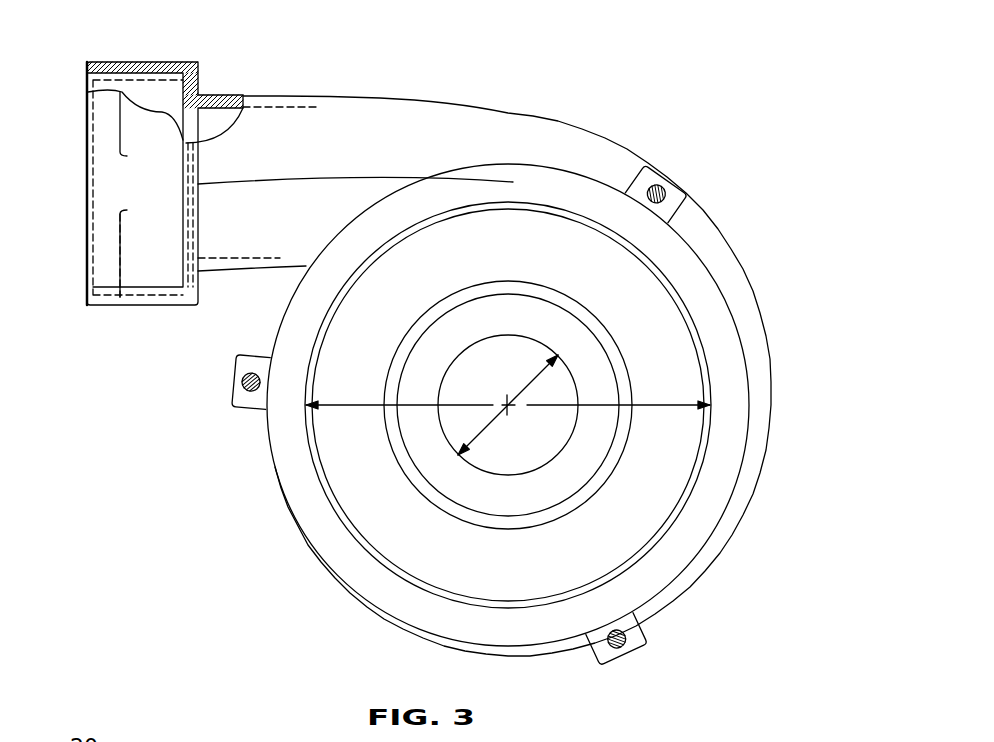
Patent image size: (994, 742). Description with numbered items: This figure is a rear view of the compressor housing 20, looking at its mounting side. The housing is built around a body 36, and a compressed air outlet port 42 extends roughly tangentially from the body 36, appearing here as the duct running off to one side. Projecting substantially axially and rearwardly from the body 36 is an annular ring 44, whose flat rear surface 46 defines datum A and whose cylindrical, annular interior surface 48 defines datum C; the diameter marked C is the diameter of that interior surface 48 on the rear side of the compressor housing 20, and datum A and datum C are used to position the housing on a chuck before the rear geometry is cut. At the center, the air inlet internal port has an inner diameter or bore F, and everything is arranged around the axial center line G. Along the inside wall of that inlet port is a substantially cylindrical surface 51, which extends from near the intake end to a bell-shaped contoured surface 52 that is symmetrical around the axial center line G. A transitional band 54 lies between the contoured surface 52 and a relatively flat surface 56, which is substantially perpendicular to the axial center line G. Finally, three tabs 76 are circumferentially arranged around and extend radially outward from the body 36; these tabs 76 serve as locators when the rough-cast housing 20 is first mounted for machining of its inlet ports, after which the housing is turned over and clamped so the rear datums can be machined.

The compressor housing 20 is at (656, 82).
The body 36 is at (680, 597).
The compressed air outlet port 42 is at (280, 96).
The annular ring 44 is at (705, 457).
The rear surface 46 is at (673, 512).
The interior surface 48 is at (376, 520).
The cylindrical surface 51 is at (493, 473).
The contoured surface 52 is at (562, 335).
The transitional band 54 is at (603, 335).
The relatively flat surface 56 is at (652, 335).
The tabs 76 is at (665, 170).
The datum C is at (375, 398).
The bore F is at (487, 427).
The axial center line G is at (507, 396).